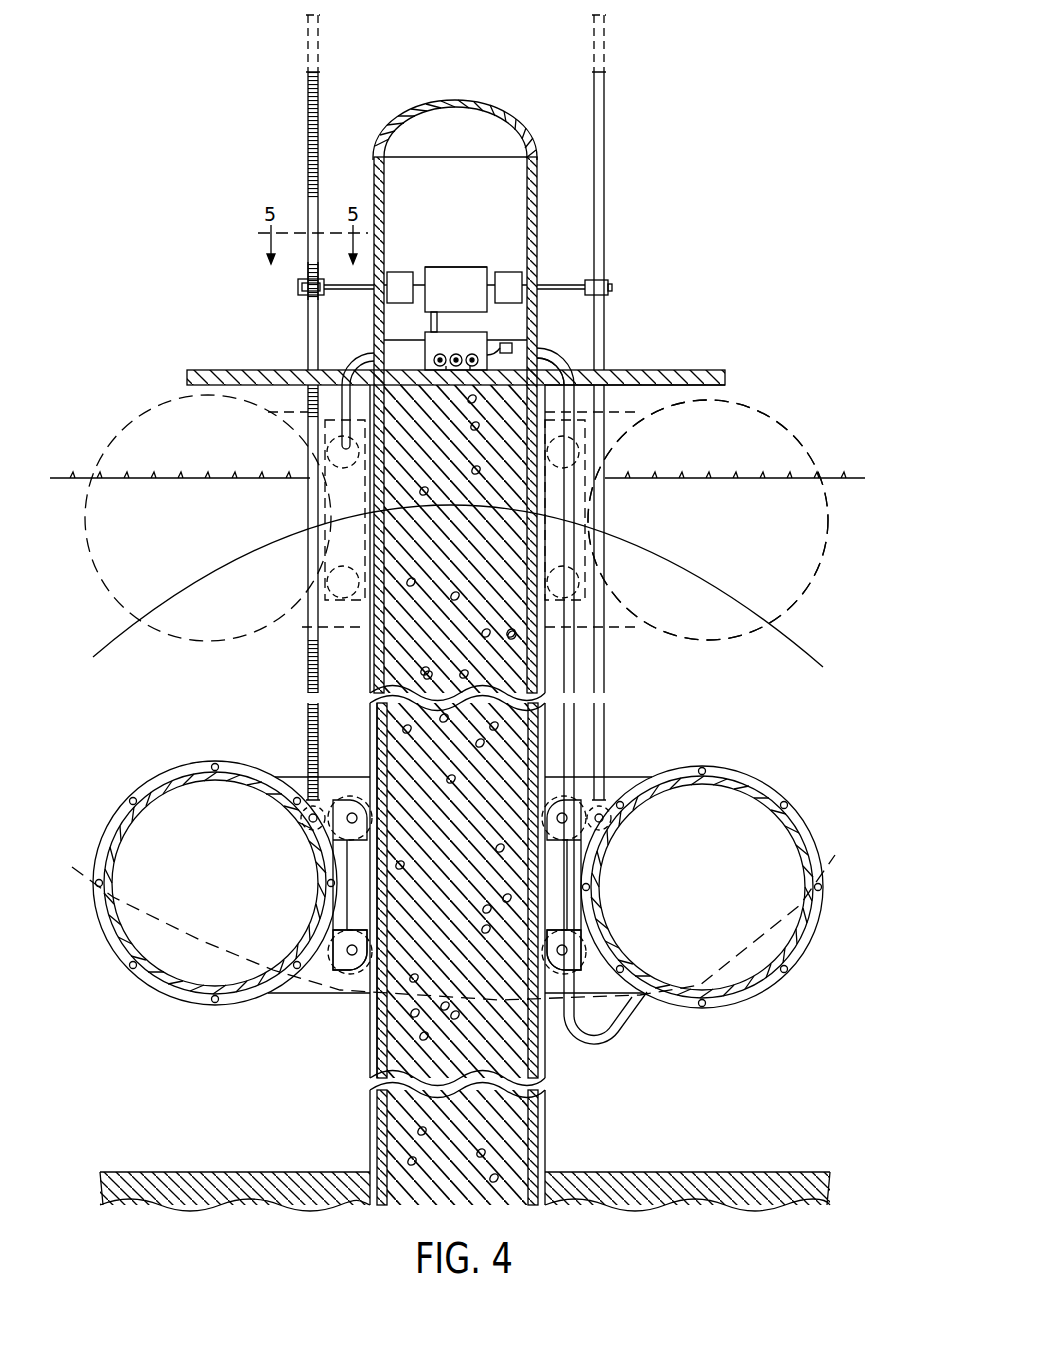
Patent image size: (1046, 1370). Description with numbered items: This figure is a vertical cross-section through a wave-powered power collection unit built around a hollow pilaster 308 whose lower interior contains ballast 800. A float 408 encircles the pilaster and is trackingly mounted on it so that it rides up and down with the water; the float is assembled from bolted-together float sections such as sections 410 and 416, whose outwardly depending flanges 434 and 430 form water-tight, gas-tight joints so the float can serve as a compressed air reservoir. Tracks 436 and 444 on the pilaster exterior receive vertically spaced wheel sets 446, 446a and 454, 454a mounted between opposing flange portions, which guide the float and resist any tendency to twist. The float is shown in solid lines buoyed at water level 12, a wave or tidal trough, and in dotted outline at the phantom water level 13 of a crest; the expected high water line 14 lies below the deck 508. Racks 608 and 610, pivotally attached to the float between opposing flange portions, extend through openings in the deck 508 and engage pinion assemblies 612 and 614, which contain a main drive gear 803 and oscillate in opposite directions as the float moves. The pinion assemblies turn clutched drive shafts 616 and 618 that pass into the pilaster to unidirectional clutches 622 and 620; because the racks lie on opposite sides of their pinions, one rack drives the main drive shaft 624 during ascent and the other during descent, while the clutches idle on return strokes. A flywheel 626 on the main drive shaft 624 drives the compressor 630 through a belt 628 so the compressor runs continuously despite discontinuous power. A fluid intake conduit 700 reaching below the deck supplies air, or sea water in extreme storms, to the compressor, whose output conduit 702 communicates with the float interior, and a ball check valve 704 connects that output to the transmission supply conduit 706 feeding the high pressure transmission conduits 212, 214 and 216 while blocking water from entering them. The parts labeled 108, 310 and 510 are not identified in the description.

The water level 12 is at (832, 860).
The phantom water level height 13 is at (822, 652).
The expected high water line 14 is at (152, 470).
The drive assembly 108 is at (667, 249).
The high pressure compressed air transmission conduit 212 is at (434, 360).
The high pressure compressed air transmission conduit 214 is at (448, 366).
The high pressure compressed air transmission conduit 216 is at (472, 366).
The pilaster 308 is at (530, 1127).
The pile cap 310 is at (440, 101).
The float 408 is at (814, 574).
The float section 410 is at (168, 795).
The float section 416 is at (790, 930).
The outwardly depending flange 430 is at (680, 1002).
The outwardly depending flange 434 is at (165, 990).
The track 436 is at (376, 1062).
The track 444 is at (544, 1147).
The wheel set 446 is at (352, 800).
The wheel set 446a is at (352, 975).
The wheel set 454 is at (568, 798).
The wheel set 454a is at (562, 975).
The deck 508 is at (690, 370).
The platform underside 510 is at (630, 385).
The rack 608 is at (605, 668).
The rack 610 is at (308, 680).
The pinion assembly 612 is at (614, 282).
The pinion assembly 614 is at (294, 283).
The clutched drive shaft 616 is at (568, 287).
The clutched drive shaft 618 is at (372, 290).
The unidirectional clutch 620 is at (400, 272).
The unidirectional clutch 622 is at (508, 272).
The main drive shaft 624 is at (432, 267).
The flywheel 626 is at (458, 267).
The belt or other drive means 628 is at (431, 320).
The compressor 630 is at (462, 334).
The fluid intake conduit 700 is at (360, 348).
The output conduit 702 is at (543, 352).
The ball check valve 704 is at (512, 346).
The transmission supply conduit 706 is at (560, 368).
The ballast 800 is at (512, 1105).
The main drive gear 803 is at (310, 298).